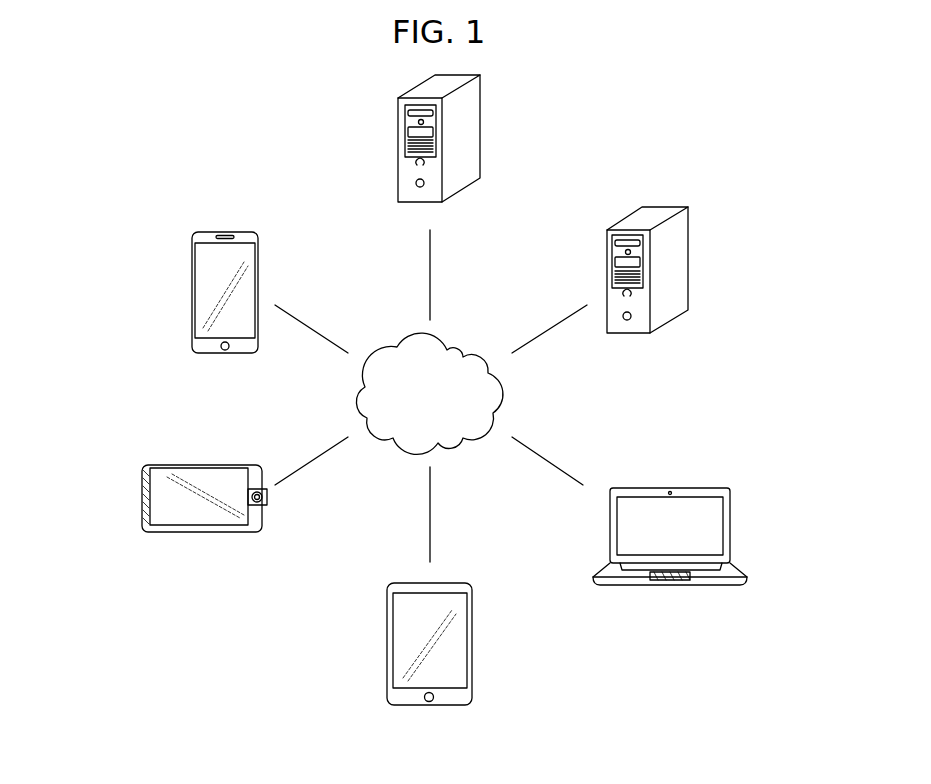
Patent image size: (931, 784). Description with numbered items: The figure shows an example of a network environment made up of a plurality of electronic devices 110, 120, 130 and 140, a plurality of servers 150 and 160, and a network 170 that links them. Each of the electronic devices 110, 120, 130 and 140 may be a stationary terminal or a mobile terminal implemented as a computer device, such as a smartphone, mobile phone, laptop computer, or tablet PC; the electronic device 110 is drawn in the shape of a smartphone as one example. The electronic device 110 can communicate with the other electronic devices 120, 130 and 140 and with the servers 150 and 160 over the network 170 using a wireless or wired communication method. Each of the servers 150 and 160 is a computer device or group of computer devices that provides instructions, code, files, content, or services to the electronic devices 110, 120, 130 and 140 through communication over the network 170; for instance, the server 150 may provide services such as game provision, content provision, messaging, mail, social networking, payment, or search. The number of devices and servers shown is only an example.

The electronic device 110 is at (192, 292).
The electronic device 120 is at (142, 497).
The electronic device 130 is at (474, 642).
The electronic device 140 is at (732, 528).
The server 150 is at (690, 258).
The server 160 is at (482, 127).
The network 170 is at (453, 343).